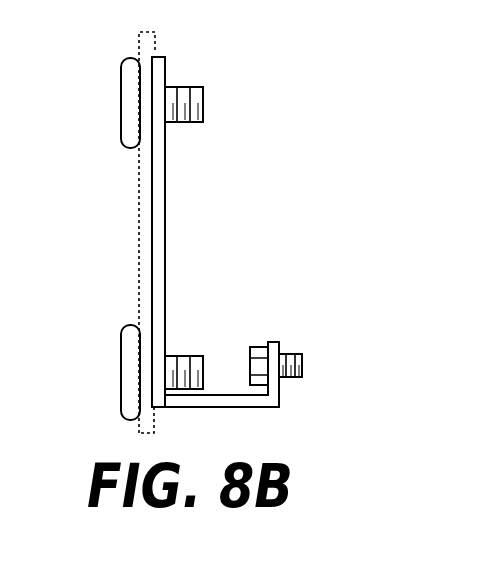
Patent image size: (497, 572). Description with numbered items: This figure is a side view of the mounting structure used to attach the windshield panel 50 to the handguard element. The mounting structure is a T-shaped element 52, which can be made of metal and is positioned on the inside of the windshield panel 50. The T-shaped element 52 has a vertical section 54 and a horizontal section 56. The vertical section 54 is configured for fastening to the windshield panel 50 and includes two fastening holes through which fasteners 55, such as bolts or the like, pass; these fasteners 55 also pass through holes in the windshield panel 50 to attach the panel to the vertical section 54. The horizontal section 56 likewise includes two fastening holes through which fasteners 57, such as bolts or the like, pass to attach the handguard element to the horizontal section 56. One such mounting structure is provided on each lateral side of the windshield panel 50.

The windshield panel 50 is at (155, 53).
The T-shaped element 52 is at (237, 232).
The vertical section 54 is at (165, 252).
The fasteners 55 is at (120, 113).
The horizontal section 56 is at (272, 342).
The fasteners 57 is at (290, 352).